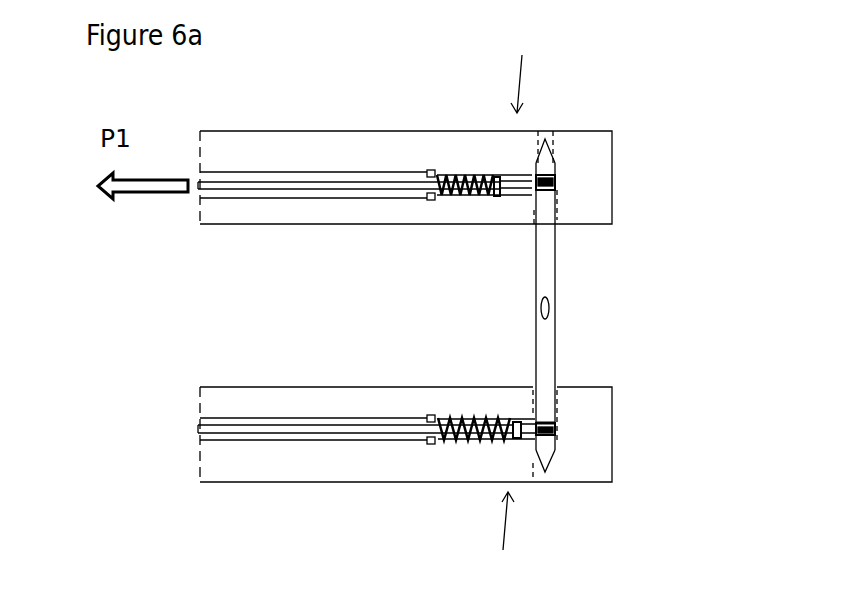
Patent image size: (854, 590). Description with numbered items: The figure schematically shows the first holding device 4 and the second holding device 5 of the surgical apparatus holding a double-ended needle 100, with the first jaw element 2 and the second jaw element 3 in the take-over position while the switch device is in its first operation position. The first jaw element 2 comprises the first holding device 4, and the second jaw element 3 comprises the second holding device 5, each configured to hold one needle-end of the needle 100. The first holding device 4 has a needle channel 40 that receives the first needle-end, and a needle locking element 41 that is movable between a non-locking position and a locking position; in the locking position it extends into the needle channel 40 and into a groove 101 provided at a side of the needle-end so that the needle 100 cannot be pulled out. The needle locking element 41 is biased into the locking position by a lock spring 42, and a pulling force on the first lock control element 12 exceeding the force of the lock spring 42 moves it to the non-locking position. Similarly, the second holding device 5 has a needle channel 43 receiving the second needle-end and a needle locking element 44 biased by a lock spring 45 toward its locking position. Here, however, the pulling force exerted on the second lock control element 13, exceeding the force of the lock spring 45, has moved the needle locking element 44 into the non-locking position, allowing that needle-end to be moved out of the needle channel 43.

The first jaw element 2 is at (342, 466).
The second jaw element 3 is at (327, 140).
The first holding device 4 is at (503, 539).
The second holding device 5 is at (524, 66).
The first lock control element 12 is at (270, 430).
The second lock control element 13 is at (248, 185).
The needle channel of first holding device 40 is at (556, 435).
The needle locking element of first holding device 41 is at (557, 443).
The lock spring of first holding device 42 is at (467, 440).
The needle channel of second holding device 43 is at (557, 195).
The needle locking element of second holding device 44 is at (517, 183).
The lock spring of second holding device 45 is at (465, 175).
The double-ended needle 100 is at (545, 329).
The groove 101 is at (550, 182).